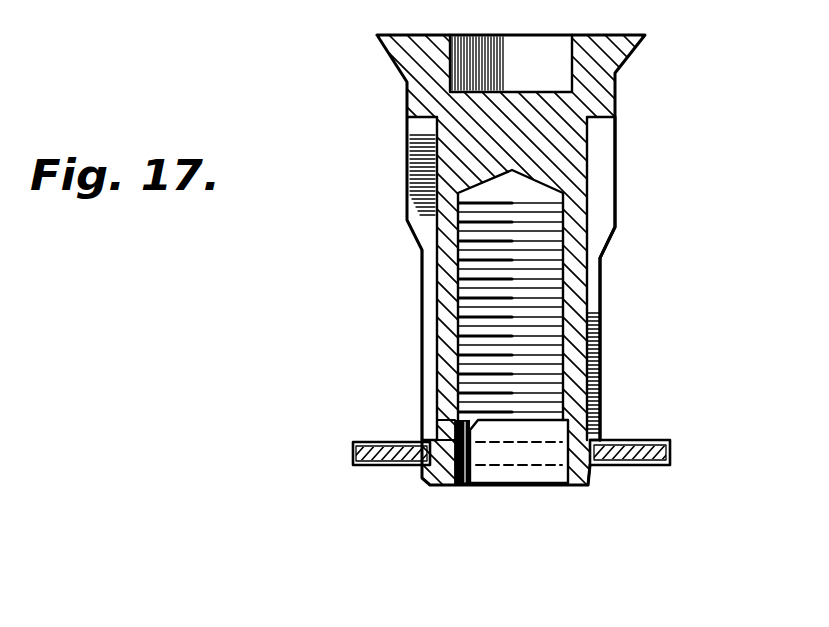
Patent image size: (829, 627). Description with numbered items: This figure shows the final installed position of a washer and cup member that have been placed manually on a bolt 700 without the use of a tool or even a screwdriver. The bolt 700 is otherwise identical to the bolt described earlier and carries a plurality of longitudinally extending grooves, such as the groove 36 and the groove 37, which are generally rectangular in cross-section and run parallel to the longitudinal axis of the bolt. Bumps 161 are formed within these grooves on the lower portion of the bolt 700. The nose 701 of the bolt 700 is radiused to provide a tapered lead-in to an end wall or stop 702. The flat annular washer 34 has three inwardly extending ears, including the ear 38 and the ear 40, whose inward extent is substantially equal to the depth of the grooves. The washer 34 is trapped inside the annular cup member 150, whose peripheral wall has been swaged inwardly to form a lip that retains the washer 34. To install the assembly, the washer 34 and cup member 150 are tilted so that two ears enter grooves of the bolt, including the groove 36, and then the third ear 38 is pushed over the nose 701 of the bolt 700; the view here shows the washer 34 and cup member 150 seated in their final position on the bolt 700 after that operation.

The bolt 700 is at (358, 98).
The groove 36 is at (600, 192).
The groove 37 is at (427, 203).
The ear 38 is at (413, 440).
The bumps 161 is at (420, 437).
The cup member 150 is at (353, 455).
The washer 34 is at (643, 465).
The ear 40 is at (612, 462).
The nose 701 is at (430, 485).
The end wall 702 is at (473, 432).